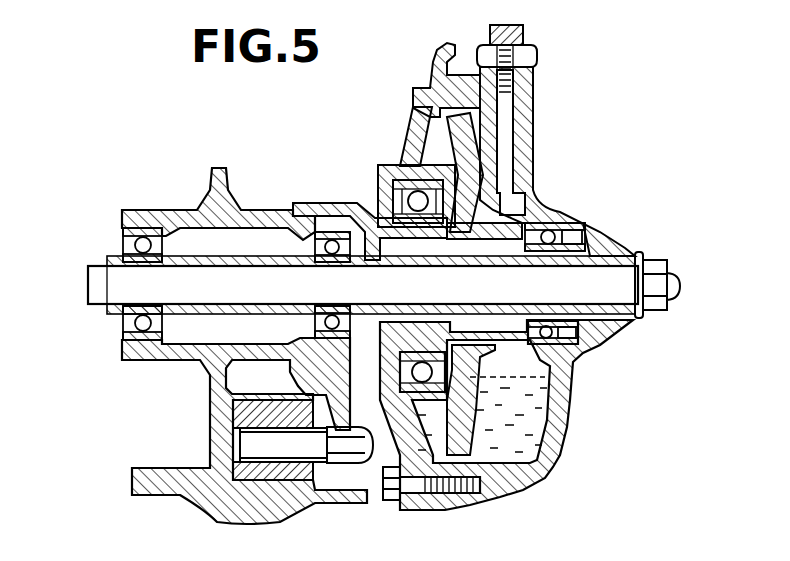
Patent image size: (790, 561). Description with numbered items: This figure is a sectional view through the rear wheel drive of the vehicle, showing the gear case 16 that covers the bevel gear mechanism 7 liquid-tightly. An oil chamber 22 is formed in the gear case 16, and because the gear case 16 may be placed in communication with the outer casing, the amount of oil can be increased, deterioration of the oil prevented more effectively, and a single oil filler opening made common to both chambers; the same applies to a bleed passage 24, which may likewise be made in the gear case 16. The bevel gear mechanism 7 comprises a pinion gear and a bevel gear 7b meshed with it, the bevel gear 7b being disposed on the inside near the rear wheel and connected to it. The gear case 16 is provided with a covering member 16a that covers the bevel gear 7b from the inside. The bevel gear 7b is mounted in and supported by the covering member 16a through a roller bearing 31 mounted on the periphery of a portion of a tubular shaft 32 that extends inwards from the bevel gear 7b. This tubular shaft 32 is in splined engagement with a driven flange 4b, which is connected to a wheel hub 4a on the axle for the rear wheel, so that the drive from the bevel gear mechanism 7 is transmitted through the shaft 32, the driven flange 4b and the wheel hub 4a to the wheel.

The wheel hub 4a is at (172, 210).
The driven flange 4b is at (318, 203).
The bevel gear mechanism 7 is at (490, 439).
The bevel gear 7b is at (480, 442).
The gear case 16 is at (560, 443).
The covering member 16a is at (407, 133).
The oil chamber 22 is at (533, 417).
The bleed passage 24 is at (508, 124).
The roller bearing 31 is at (388, 174).
The tubular shaft 32 is at (102, 296).